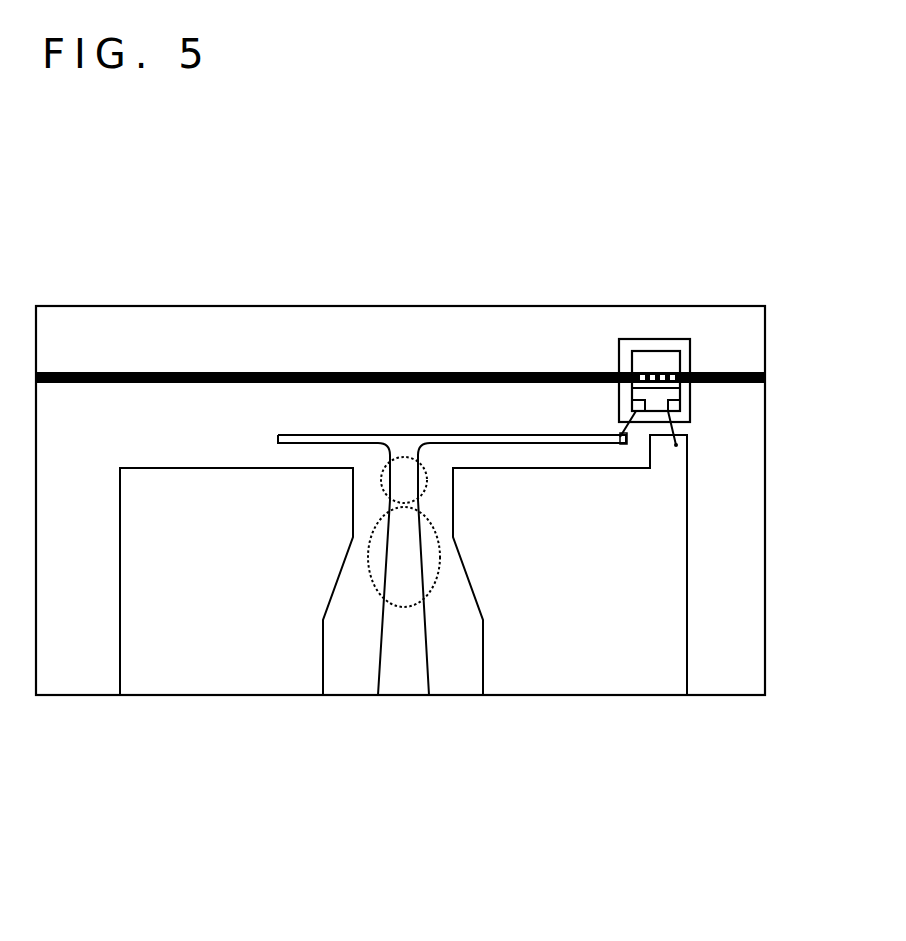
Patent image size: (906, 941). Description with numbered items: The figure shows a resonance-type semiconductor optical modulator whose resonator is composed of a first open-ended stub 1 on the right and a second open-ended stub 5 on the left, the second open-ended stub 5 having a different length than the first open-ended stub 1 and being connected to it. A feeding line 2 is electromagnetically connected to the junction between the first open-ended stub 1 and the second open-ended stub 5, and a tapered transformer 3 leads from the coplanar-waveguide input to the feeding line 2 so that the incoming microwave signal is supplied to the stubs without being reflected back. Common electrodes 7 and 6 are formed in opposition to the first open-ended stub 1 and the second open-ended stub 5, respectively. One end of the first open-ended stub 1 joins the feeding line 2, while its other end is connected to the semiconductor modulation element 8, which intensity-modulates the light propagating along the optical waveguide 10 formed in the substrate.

The first open-ended stub 1 is at (510, 432).
The feeding line 2 is at (404, 452).
The tapered transformer 3 is at (404, 597).
The second open-ended stub 5 is at (355, 424).
The common electrode 6 is at (263, 668).
The common electrode 7 is at (580, 697).
The semiconductor optical modulation element 8 is at (668, 345).
The optical waveguide 10 is at (108, 365).